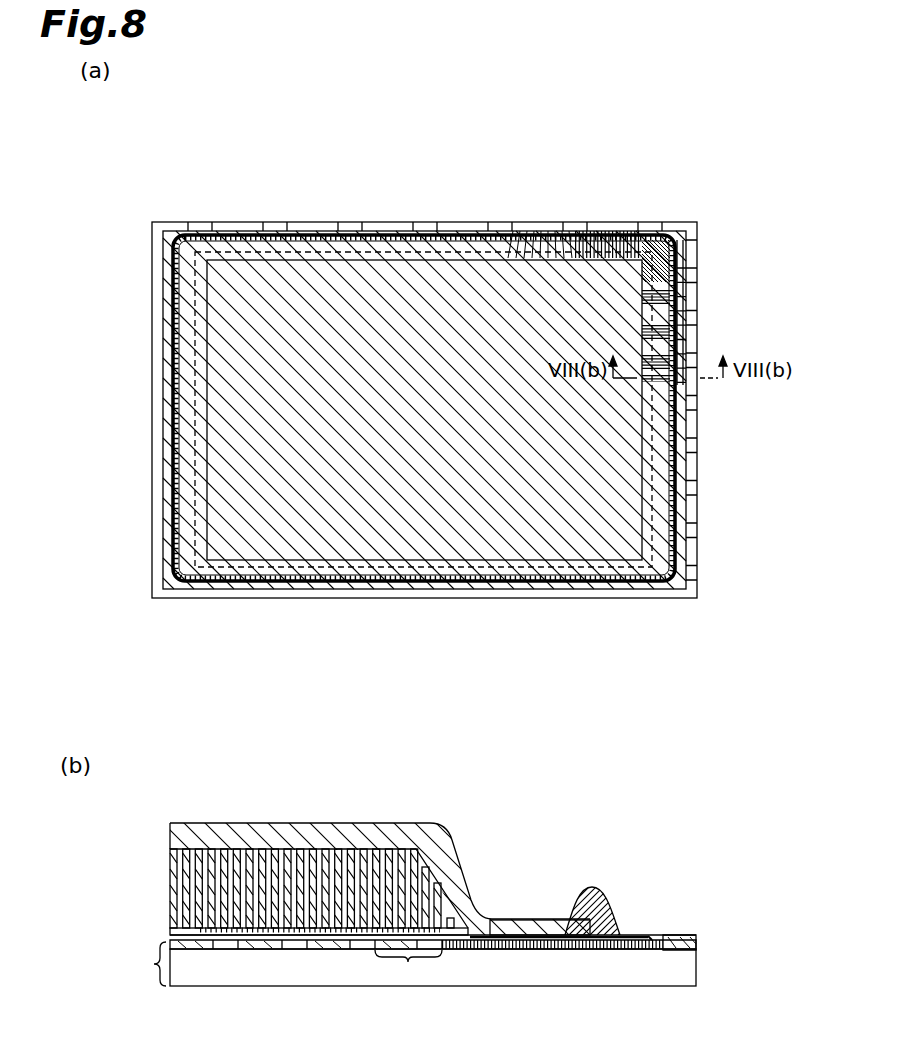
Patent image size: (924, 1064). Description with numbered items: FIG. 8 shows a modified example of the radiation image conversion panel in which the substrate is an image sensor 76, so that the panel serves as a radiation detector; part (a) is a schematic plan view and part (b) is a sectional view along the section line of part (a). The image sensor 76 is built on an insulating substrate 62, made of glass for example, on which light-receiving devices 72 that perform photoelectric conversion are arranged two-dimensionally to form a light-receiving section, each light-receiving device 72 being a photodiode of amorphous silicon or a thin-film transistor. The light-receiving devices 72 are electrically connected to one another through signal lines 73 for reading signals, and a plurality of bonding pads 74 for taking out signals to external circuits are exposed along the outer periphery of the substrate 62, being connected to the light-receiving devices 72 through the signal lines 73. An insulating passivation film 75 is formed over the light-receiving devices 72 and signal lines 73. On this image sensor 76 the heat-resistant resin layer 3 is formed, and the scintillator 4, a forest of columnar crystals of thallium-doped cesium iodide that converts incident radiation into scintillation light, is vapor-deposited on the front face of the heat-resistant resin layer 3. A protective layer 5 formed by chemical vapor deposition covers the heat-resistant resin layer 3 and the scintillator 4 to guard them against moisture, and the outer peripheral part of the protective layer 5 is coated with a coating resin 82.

The insulating substrate 62 is at (636, 201).
The signal lines 73 is at (680, 238).
The bonding pads 74 is at (693, 262).
The insulating passivation film 75 is at (268, 233).
The scintillator 4 is at (655, 430).
The protective layer 5 is at (645, 470).
The coating resin 82 is at (670, 532).
The light-receiving devices 72 is at (612, 567).
The heat-resistant resin layer 3 is at (168, 930).
The image sensor 76 is at (147, 964).